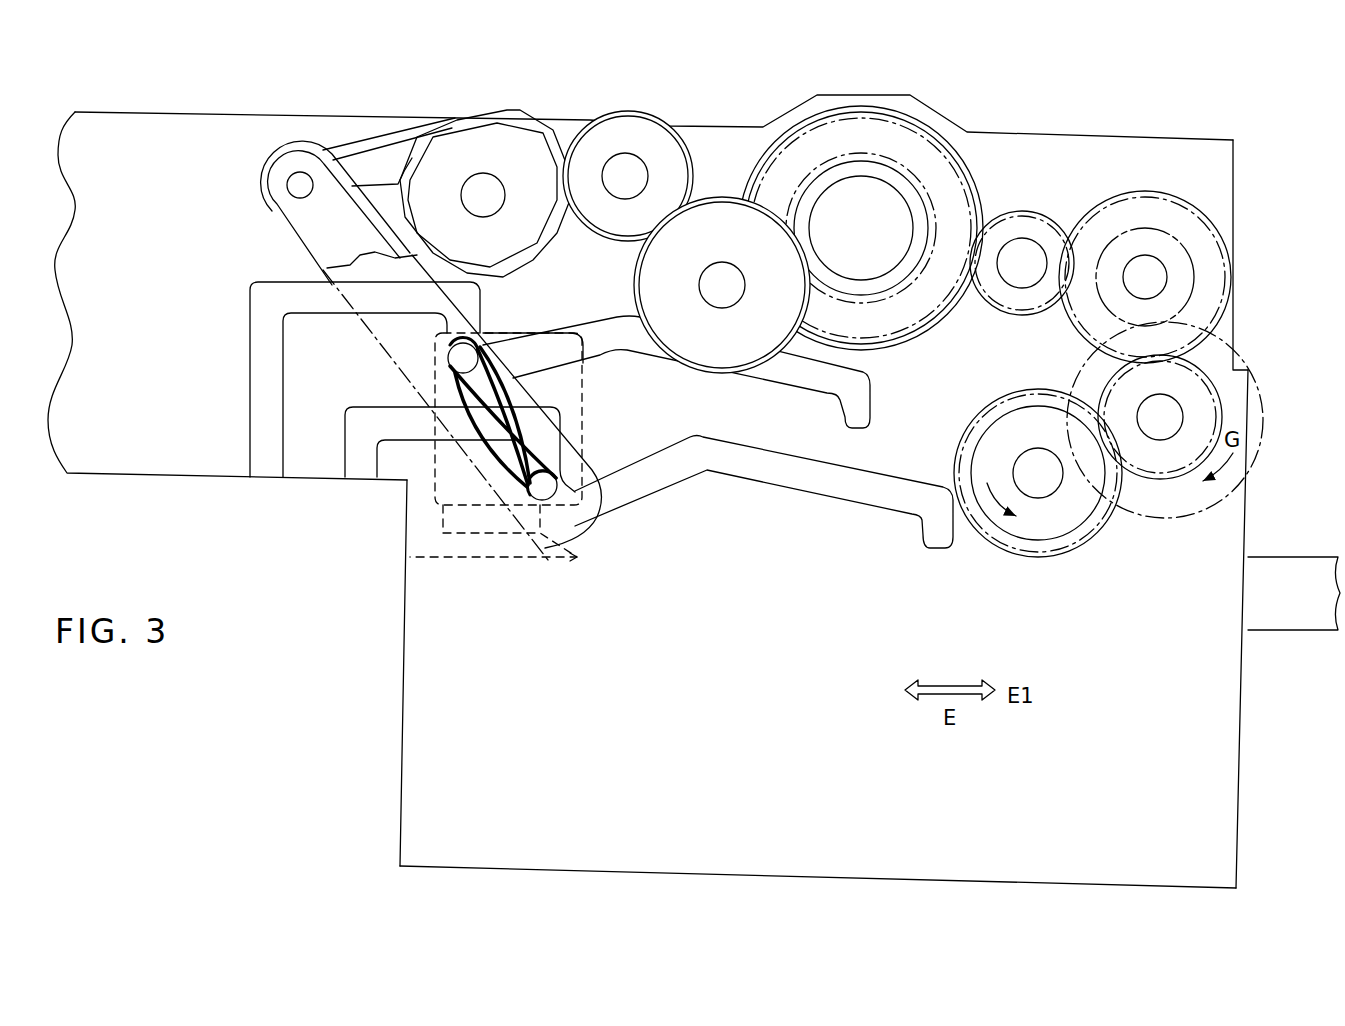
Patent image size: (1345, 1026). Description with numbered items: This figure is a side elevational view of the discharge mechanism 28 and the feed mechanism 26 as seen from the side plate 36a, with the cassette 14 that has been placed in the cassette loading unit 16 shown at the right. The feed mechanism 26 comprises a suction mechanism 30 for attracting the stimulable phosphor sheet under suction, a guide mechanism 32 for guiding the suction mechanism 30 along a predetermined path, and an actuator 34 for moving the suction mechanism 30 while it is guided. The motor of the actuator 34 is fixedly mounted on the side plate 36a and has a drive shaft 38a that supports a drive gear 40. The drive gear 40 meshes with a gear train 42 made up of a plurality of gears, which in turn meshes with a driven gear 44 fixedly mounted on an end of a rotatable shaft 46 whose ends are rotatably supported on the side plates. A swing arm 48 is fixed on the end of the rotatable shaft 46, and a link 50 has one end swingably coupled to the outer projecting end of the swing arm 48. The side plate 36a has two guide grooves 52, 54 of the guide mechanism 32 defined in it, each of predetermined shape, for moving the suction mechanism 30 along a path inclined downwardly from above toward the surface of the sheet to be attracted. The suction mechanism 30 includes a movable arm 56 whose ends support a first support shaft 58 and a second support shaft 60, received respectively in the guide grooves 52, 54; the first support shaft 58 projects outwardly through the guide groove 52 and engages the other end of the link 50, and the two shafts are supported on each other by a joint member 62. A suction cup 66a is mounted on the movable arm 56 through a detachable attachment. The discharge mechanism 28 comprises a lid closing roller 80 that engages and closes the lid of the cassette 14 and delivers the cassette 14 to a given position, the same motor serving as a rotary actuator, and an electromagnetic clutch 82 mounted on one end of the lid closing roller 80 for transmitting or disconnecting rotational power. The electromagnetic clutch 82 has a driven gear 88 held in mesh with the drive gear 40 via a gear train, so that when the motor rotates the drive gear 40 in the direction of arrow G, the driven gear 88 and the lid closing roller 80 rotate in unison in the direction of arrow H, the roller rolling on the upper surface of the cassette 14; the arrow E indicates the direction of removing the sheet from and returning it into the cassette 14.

The cassette 14 is at (1282, 604).
The cassette loading unit 16 is at (1312, 104).
The feed mechanism 26 is at (1252, 190).
The discharge mechanism 28 is at (1115, 582).
The suction mechanism 30 is at (488, 599).
The guide mechanism 32 is at (630, 362).
The actuator 34 is at (1180, 166).
The side plate 36a is at (430, 647).
The drive shaft 38a is at (1020, 278).
The drive gear 40 is at (1030, 214).
The gear train 42 is at (990, 177).
The driven gear 44 is at (462, 112).
The rotatable shaft 46 is at (487, 187).
The swing arm 48 is at (536, 264).
The link 50 is at (300, 218).
The guide groove 52 is at (835, 482).
The guide groove 54 is at (810, 382).
The movable arm 56 is at (599, 446).
The first support shaft 58 is at (540, 484).
The second support shaft 60 is at (460, 360).
The joint member 62 is at (497, 400).
The suction cup 66a is at (430, 543).
The lid closing roller 80 is at (986, 438).
The electromagnetic clutch 82 is at (1058, 540).
The driven gear 88 is at (1033, 557).